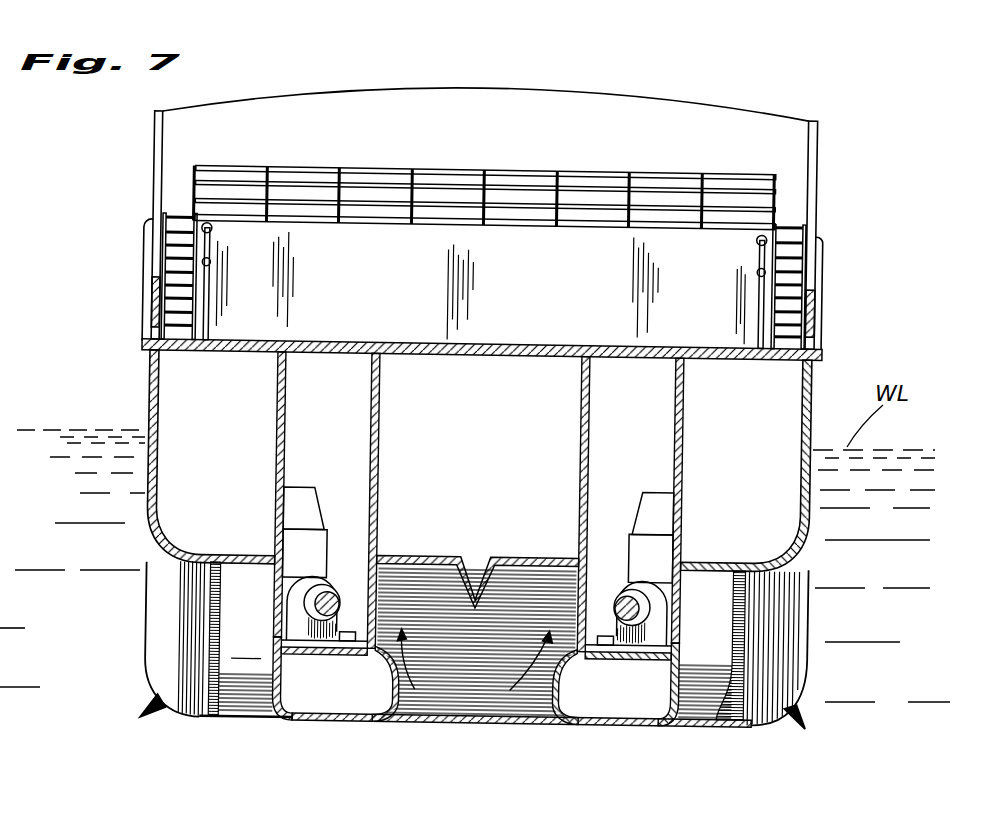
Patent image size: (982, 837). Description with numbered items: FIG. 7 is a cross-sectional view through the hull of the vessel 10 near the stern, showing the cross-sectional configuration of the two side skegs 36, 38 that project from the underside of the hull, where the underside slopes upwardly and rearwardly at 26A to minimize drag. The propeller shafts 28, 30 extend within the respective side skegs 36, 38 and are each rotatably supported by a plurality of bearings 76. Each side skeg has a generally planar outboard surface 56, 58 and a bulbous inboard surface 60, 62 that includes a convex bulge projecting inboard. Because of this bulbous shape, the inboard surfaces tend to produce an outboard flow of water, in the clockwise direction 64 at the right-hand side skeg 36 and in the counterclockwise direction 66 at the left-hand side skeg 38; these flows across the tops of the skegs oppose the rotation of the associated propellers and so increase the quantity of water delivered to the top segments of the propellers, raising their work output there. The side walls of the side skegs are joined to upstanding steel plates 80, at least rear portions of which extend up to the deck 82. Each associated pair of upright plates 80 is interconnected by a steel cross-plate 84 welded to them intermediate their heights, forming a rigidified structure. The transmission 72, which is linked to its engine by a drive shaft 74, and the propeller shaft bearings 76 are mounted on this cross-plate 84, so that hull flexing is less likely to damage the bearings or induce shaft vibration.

The floating vessel 10 is at (860, 291).
The upwardly and rearwardly sloping portion of underside 26A is at (433, 558).
The propeller shaft 28 is at (650, 603).
The propeller shaft 30 is at (317, 598).
The side skeg 36 is at (712, 690).
The side skeg 38 is at (243, 665).
The outboard surface 56 is at (672, 640).
The outboard surface 58 is at (273, 620).
The inboard surface 60 is at (560, 697).
The inboard surface 62 is at (397, 690).
The clockwise direction 64 is at (507, 640).
The counterclockwise direction 66 is at (507, 640).
The transmission 72 is at (315, 552).
The drive shaft 74 is at (295, 505).
The bearing 76 is at (307, 587).
The upstanding steel plate 80 is at (278, 425).
The deck 82 is at (527, 345).
The steel cross-plate 84 is at (327, 653).